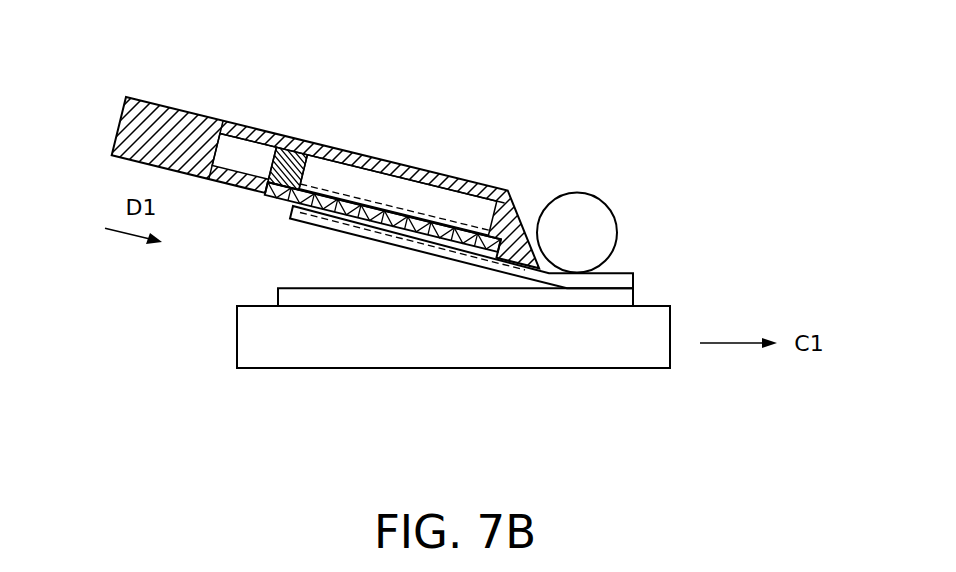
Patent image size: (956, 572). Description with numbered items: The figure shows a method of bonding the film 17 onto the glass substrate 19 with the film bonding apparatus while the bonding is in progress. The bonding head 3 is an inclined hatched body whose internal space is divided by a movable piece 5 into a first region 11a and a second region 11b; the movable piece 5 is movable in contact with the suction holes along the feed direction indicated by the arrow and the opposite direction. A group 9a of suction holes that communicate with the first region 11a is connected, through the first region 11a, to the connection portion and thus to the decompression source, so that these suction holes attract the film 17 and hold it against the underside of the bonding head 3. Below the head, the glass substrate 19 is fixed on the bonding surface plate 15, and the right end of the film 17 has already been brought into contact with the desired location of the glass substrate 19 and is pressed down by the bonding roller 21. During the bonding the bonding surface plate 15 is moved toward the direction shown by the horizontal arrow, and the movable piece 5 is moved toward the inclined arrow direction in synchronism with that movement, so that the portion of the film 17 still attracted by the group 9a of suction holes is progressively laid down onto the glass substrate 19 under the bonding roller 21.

The bonding head 3 is at (131, 98).
The second region 11b is at (235, 143).
The movable piece 5 is at (290, 153).
The first region 11a is at (447, 205).
The group of suction holes 9a is at (352, 200).
The film 17 is at (569, 280).
The bonding roller 21 is at (610, 220).
The glass substrate 19 is at (335, 295).
The bonding surface plate 15 is at (245, 353).